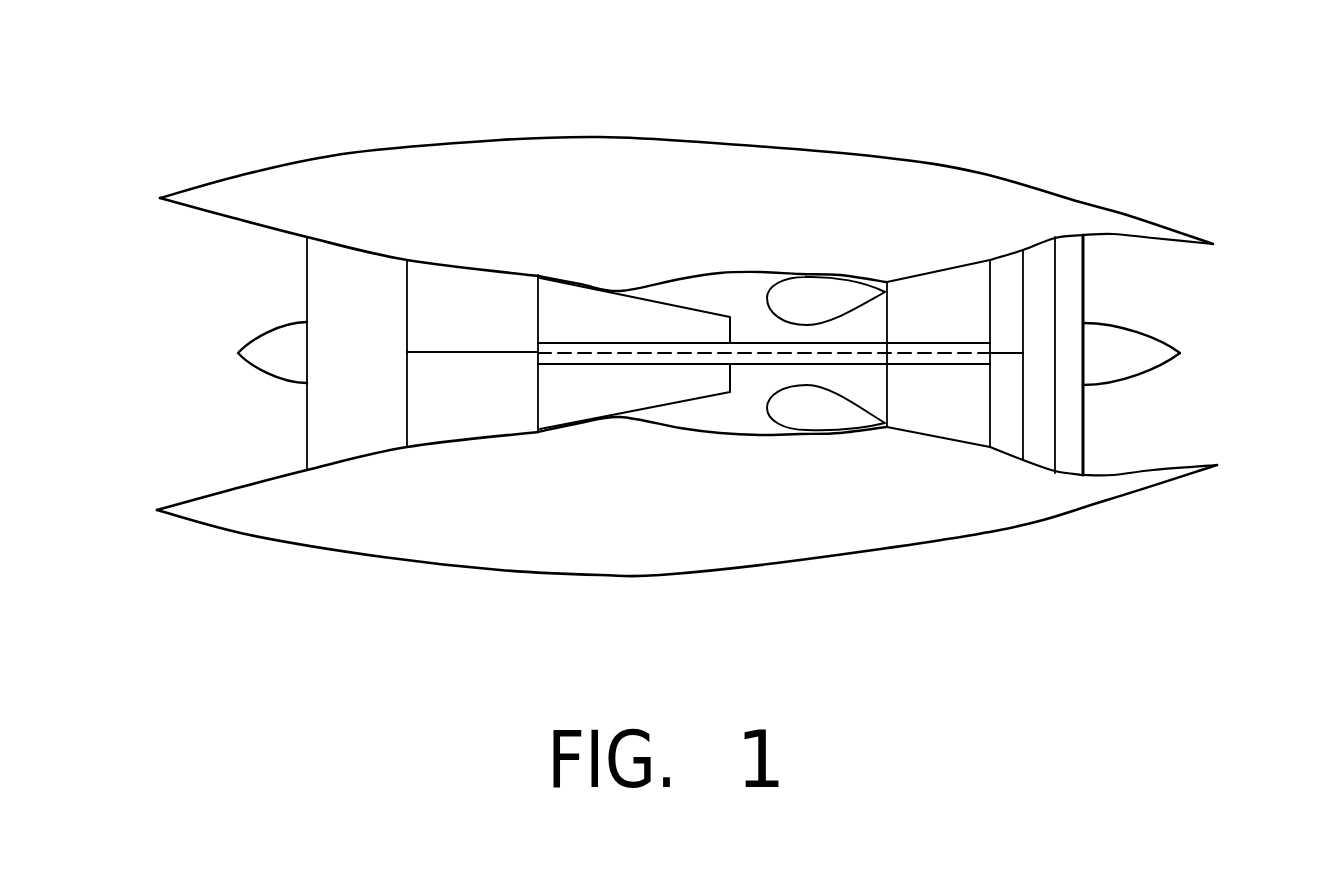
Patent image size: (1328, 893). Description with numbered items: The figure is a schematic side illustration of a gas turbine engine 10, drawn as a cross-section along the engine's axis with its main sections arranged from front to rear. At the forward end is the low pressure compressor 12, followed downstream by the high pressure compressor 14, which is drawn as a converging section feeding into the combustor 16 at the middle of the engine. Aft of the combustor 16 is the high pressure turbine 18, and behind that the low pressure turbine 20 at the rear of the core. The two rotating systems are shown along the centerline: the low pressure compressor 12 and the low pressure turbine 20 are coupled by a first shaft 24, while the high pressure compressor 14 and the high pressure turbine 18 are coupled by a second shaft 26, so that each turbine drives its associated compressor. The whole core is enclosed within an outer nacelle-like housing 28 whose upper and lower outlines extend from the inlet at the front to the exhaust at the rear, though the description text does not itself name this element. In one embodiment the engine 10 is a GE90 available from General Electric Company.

The gas turbine engine 10 is at (776, 74).
The low pressure compressor 12 is at (350, 265).
The high pressure compressor 14 is at (572, 310).
The combustor 16 is at (805, 292).
The high pressure turbine 18 is at (928, 292).
The low pressure turbine 20 is at (1038, 257).
The first shaft 24 is at (507, 352).
The second shaft 26 is at (760, 365).
The nacelle 28 is at (1157, 470).